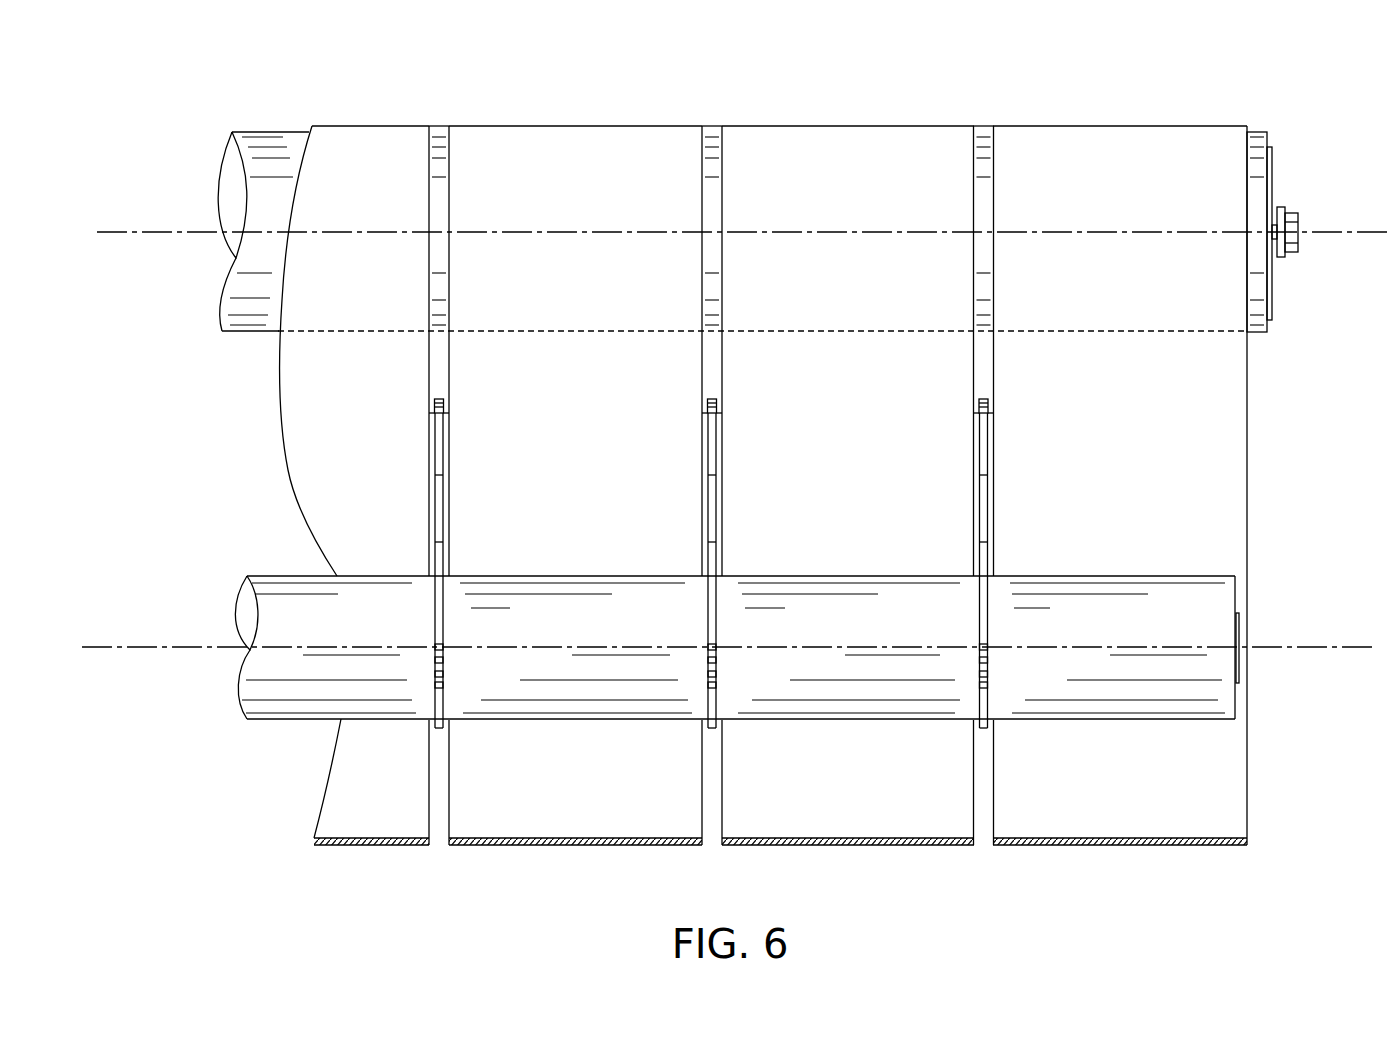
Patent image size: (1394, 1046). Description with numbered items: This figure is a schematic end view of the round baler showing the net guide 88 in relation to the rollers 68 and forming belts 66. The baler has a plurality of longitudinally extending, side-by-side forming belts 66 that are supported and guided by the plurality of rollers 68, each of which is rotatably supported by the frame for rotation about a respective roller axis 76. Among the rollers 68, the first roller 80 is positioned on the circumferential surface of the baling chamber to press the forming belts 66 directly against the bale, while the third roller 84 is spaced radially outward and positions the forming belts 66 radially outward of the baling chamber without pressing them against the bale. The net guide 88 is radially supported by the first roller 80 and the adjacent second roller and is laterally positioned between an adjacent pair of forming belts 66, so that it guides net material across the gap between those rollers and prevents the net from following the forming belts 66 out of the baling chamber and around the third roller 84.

The forming belts 66 is at (375, 775).
The rollers 68 is at (297, 145).
The roller axis 76 is at (1342, 232).
The first roller 80 is at (305, 610).
The third roller 84 is at (303, 140).
The net guide 88 is at (438, 508).